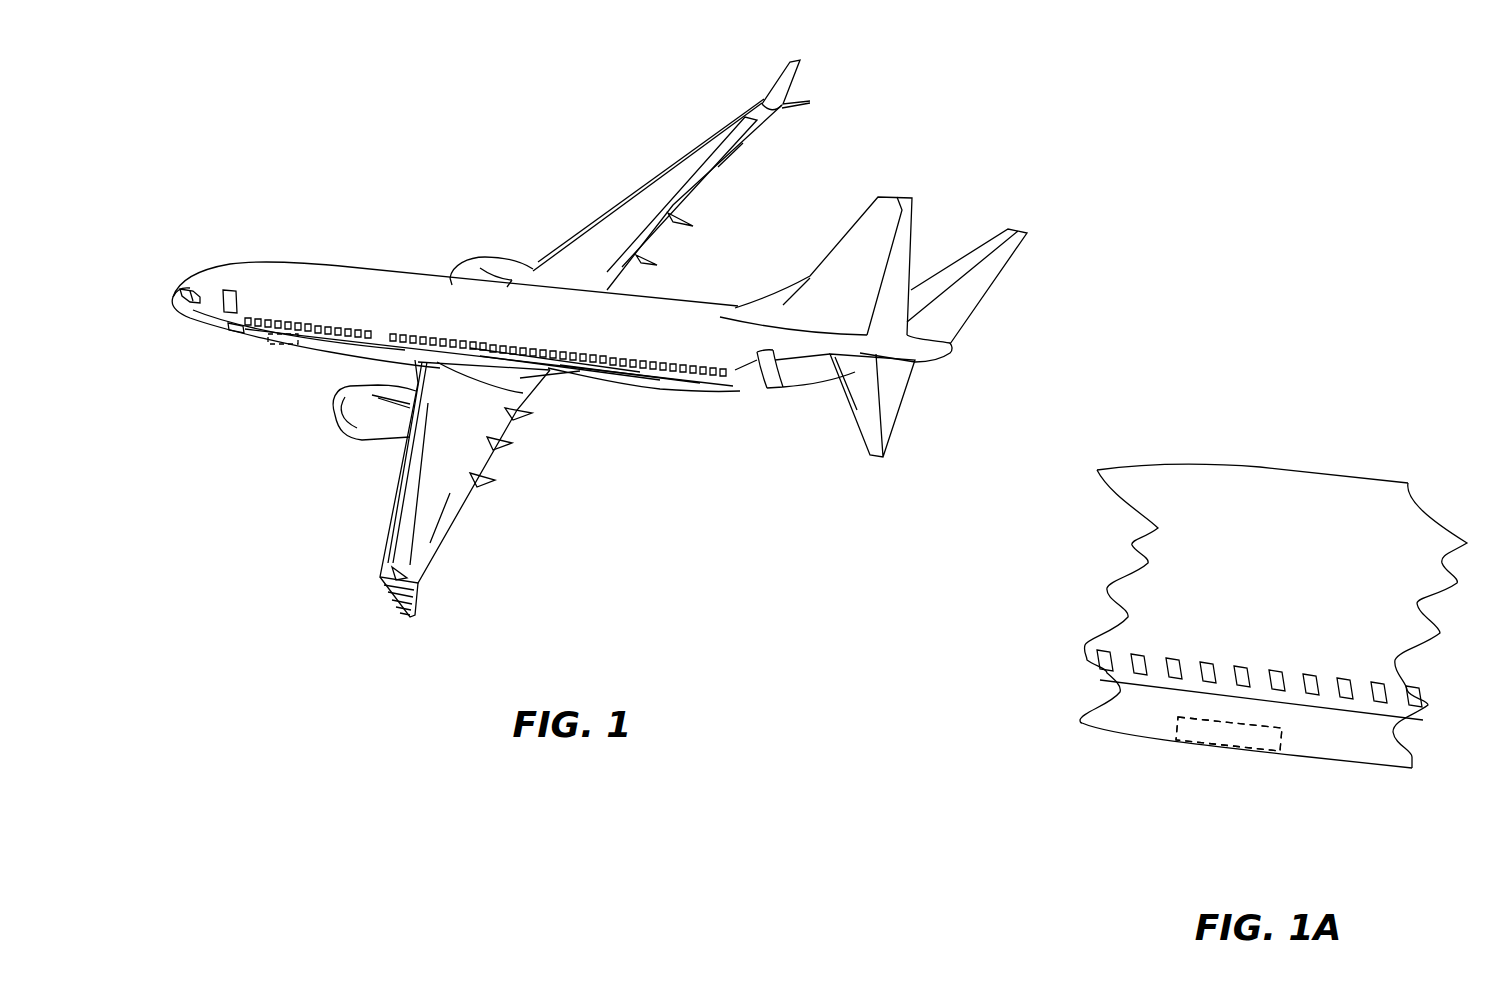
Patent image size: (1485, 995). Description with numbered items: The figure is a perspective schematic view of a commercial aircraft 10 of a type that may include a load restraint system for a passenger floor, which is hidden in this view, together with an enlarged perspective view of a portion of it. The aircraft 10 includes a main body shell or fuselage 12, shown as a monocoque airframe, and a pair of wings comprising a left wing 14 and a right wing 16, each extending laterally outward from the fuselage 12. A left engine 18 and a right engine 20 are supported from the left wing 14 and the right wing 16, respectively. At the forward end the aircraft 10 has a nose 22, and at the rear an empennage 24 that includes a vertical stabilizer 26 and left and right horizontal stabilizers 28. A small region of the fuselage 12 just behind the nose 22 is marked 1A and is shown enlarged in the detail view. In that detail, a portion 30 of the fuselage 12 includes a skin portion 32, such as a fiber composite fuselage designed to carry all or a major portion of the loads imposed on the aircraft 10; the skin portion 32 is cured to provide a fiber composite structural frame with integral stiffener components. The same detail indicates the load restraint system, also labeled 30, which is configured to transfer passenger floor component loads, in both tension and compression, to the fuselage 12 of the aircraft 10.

In FIG. 1, the aircraft 10 is at (402, 207).
In FIG. 1, the fuselage 12 is at (283, 272).
In FIG. 1A, the fuselage 12 is at (1255, 494).
In FIG. 1, the left wing 14 is at (410, 530).
In FIG. 1, the right wing 16 is at (673, 184).
In FIG. 1, the left engine 18 is at (355, 430).
In FIG. 1, the right engine 20 is at (472, 263).
In FIG. 1, the nose 22 is at (175, 299).
In FIG. 1, the empennage 24 is at (928, 245).
In FIG. 1, the vertical stabilizer 26 is at (853, 248).
In FIG. 1, the horizontal stabilizers 28 is at (968, 260).
In FIG. 1, the portion of FIG. 1 1A is at (280, 347).
In FIG. 1A, the portion of the fuselage 30 is at (1202, 741).
In FIG. 1A, the skin portion 32 is at (1237, 746).